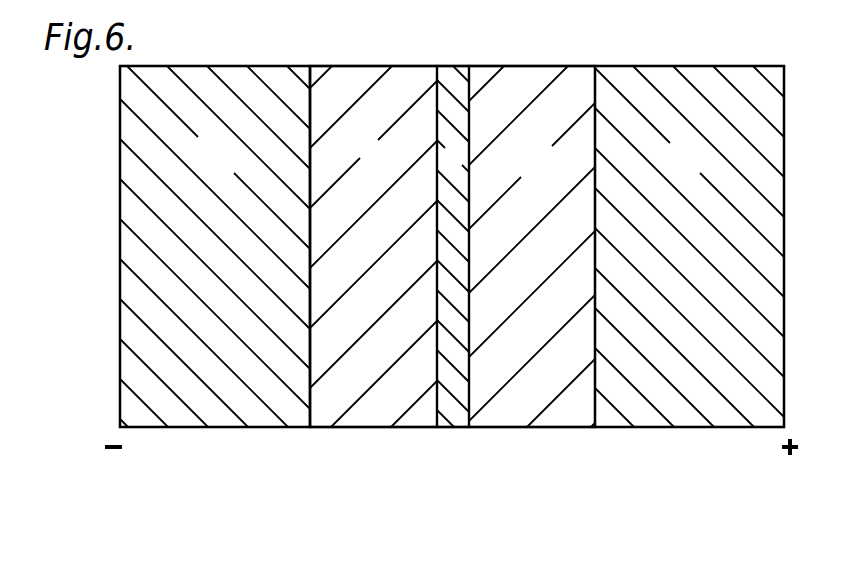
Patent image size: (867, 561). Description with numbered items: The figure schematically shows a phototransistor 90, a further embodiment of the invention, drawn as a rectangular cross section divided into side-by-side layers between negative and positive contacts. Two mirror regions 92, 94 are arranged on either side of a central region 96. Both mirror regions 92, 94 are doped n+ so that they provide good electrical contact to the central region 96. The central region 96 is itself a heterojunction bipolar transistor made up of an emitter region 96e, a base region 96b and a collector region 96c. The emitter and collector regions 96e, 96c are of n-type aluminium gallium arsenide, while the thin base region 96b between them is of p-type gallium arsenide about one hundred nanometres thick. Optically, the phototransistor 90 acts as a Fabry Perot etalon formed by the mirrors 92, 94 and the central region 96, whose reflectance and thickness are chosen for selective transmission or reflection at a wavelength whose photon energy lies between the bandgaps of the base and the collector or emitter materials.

The phototransistor 90 is at (318, 429).
The mirror region 92 is at (213, 66).
The mirror region 94 is at (697, 66).
The central region 96 is at (595, 61).
The emitter region 96e is at (380, 417).
The base region 96b is at (449, 418).
The collector region 96c is at (536, 417).